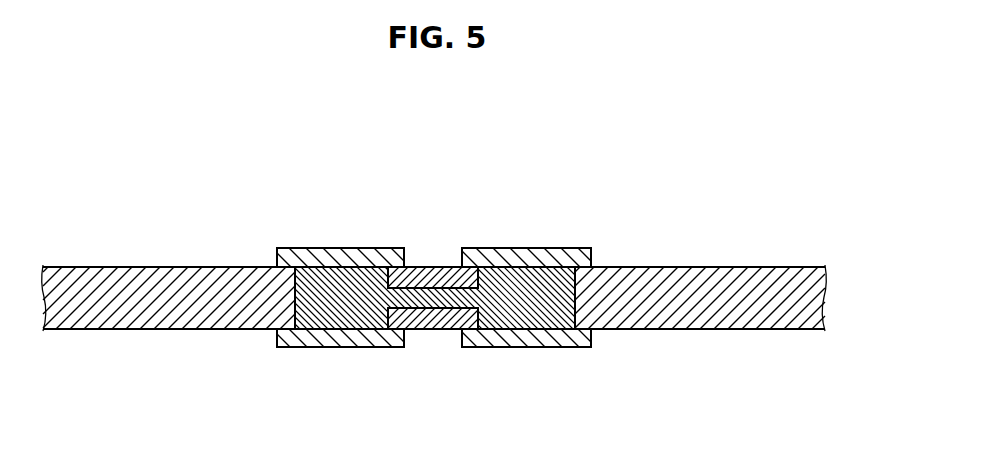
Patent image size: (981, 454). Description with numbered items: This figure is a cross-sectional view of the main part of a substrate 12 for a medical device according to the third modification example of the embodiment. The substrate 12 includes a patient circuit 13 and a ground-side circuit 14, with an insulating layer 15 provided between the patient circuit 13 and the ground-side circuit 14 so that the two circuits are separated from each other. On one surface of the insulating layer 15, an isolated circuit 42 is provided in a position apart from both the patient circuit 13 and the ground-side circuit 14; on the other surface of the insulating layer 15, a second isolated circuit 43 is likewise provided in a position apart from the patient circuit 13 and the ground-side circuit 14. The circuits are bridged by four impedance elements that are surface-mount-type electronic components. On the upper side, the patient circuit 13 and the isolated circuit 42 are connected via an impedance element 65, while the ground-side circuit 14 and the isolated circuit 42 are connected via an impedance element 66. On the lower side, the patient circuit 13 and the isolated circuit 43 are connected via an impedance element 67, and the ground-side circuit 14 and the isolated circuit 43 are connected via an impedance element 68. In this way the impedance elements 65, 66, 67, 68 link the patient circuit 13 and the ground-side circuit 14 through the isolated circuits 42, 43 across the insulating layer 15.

The substrate 12 is at (625, 174).
The patient circuit 13 is at (163, 268).
The ground-side circuit 14 is at (705, 277).
The insulating layer 15 is at (315, 315).
The isolated circuit 42 is at (436, 270).
The isolated circuit 43 is at (437, 318).
The impedance element 65 is at (338, 250).
The impedance element 66 is at (530, 250).
The impedance element 67 is at (373, 340).
The impedance element 68 is at (531, 340).